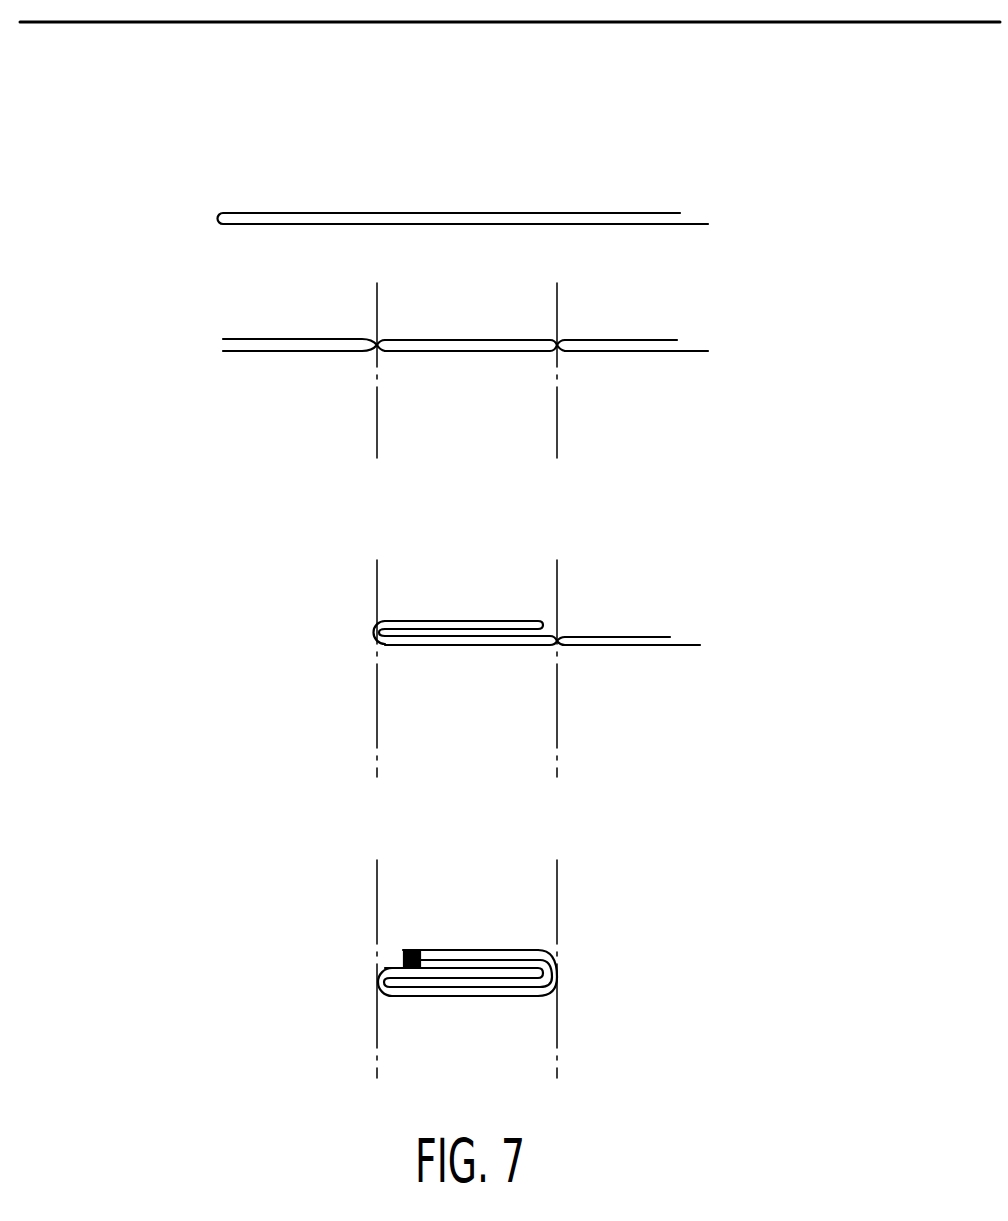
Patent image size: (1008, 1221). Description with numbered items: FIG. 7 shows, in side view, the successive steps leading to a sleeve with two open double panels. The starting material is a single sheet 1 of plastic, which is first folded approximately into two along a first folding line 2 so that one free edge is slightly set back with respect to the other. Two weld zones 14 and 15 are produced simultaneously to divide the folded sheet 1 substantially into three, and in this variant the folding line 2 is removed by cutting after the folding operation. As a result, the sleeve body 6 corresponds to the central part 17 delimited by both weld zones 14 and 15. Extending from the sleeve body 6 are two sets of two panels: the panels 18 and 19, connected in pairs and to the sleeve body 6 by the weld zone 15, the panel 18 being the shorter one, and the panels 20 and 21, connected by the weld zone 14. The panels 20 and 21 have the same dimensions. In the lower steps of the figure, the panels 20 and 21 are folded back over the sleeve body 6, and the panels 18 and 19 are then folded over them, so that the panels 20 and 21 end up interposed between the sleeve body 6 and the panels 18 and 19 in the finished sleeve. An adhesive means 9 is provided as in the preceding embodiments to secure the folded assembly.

The sheet 1 is at (660, 22).
The folding line 2 is at (220, 217).
The sleeve body 6 is at (447, 352).
The adhesive means 9 is at (405, 955).
The weld zone 14 is at (377, 344).
The weld zone 15 is at (557, 344).
The central part 17 is at (498, 352).
The free panel 18 is at (660, 340).
The free panel 19 is at (640, 352).
The panel 20 is at (293, 339).
The panel 21 is at (305, 352).